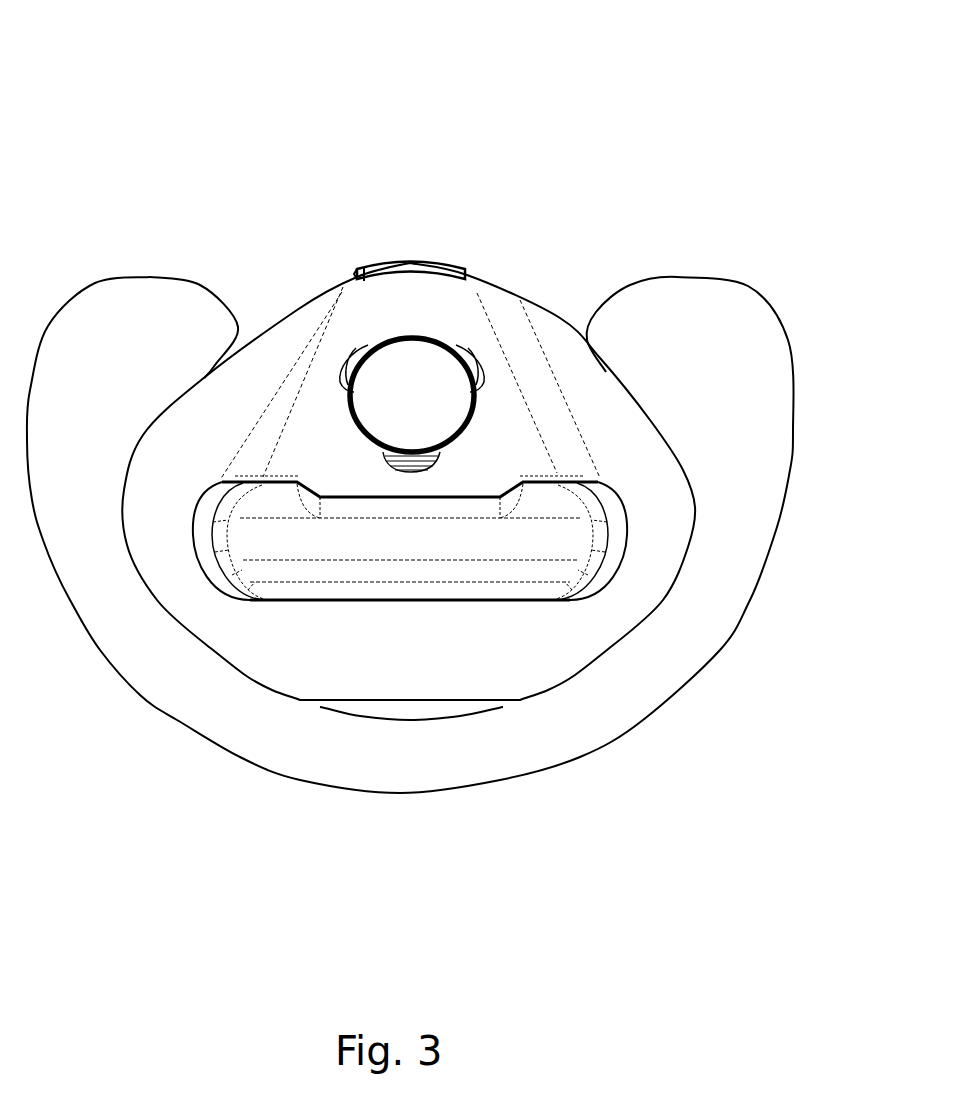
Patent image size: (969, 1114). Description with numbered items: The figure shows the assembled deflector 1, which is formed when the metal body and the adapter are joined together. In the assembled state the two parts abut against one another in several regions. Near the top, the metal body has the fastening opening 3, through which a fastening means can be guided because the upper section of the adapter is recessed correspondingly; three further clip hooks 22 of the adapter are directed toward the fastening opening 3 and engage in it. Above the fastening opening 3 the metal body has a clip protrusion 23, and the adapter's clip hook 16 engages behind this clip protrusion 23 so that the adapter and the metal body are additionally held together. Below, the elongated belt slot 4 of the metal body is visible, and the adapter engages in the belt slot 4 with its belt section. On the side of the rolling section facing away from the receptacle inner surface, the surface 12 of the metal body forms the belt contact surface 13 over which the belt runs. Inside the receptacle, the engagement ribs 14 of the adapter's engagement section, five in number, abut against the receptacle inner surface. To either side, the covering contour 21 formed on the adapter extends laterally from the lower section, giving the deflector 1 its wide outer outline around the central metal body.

The deflector 1 is at (168, 112).
The fastening opening 3 is at (412, 378).
The belt slot 4 is at (492, 535).
The surface 12 is at (401, 590).
The belt contact surface 13 is at (315, 573).
The engagement ribs 14 is at (357, 707).
The clip hook 16 is at (403, 270).
The covering contour 21 is at (115, 302).
The further clip hooks 22 is at (477, 370).
The clip protrusion 23 is at (370, 267).